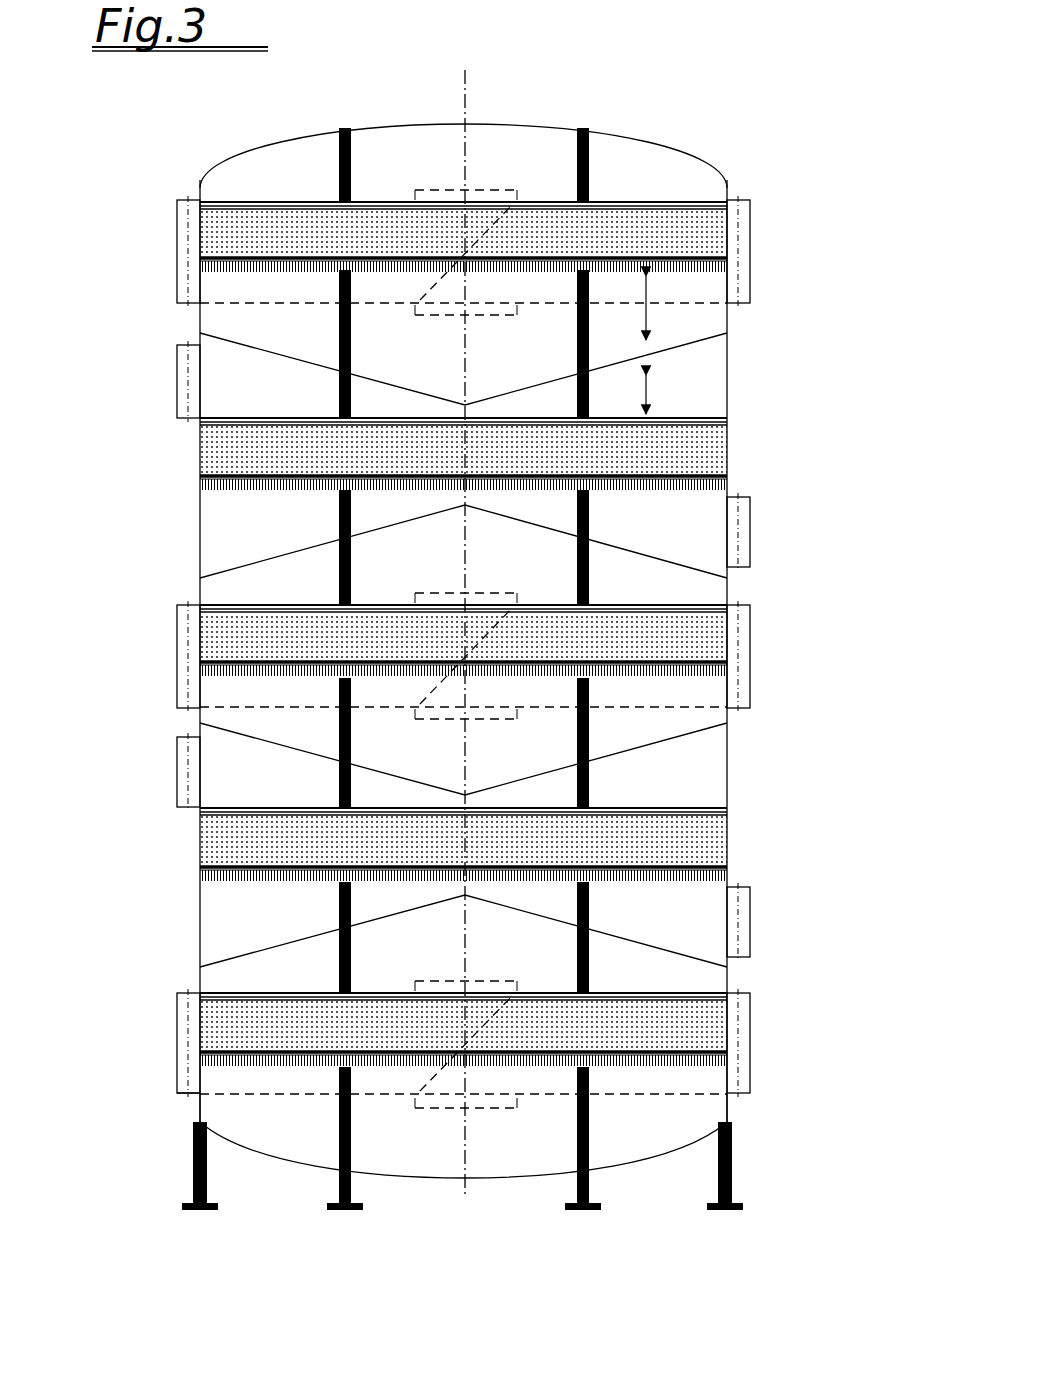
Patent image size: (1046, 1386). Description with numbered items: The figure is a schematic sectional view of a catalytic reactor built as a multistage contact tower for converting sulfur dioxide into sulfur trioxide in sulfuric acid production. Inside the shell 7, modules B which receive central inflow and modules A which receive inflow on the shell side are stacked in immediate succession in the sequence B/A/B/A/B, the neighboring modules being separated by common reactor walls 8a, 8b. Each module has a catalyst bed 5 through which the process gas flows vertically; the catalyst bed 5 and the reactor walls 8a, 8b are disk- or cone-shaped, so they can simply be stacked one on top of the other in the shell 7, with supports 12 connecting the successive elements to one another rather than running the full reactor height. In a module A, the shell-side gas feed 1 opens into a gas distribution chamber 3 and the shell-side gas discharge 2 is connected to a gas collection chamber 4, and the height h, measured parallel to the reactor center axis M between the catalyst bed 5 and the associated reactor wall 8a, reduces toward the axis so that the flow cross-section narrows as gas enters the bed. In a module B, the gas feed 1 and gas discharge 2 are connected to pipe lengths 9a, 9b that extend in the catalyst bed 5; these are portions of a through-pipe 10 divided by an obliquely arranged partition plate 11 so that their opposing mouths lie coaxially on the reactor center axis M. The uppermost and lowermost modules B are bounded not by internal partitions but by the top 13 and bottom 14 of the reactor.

The shell-side gas feed 1 is at (178, 266).
The shell-side gas discharge 2 is at (750, 268).
The gas distribution chamber 3 is at (557, 137).
The gas collection chamber 4 is at (217, 318).
The catalyst bed 5 is at (248, 220).
The shell 7 is at (200, 900).
The reactor wall 8a is at (652, 752).
The reactor wall 8b is at (648, 935).
The pipe length 9a is at (233, 1093).
The pipe length 9b is at (680, 1093).
The through-pipe 10 is at (176, 1082).
The partition plate 11 is at (433, 1073).
The support 12 is at (340, 905).
The top 13 is at (401, 127).
The bottom 14 is at (418, 1175).
The reactor center axis M is at (470, 97).
The height h is at (647, 322).
The module which receives inflow on the shell side A is at (776, 449).
The module which receives central inflow B is at (758, 166).